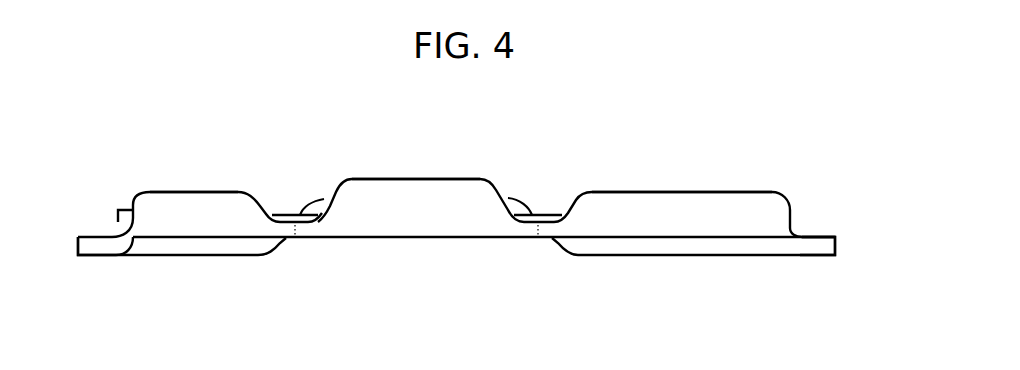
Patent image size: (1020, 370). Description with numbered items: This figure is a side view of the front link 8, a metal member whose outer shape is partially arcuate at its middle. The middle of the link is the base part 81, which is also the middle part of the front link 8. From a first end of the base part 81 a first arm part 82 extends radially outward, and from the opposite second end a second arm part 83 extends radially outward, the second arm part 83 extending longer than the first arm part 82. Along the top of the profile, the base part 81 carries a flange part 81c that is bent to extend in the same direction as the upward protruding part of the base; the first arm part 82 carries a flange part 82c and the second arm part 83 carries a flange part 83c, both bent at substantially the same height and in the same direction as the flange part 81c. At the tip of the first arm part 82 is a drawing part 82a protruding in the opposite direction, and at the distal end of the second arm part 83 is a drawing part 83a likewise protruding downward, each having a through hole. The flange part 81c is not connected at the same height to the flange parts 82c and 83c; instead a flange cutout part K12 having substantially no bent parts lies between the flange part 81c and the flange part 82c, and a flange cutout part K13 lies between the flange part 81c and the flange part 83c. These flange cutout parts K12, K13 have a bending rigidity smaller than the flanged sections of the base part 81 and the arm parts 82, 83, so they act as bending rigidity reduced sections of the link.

The front link 8 is at (446, 240).
The base part 81 is at (496, 180).
The flange part 81c is at (402, 178).
The first arm part 82 is at (147, 192).
The flange part 82c is at (198, 191).
The drawing part 82a is at (97, 256).
The second arm part 83 is at (670, 257).
The flange part 83c is at (699, 191).
The drawing part 83a is at (818, 236).
The flange cutout part K12 is at (289, 259).
The flange cutout part K13 is at (535, 259).